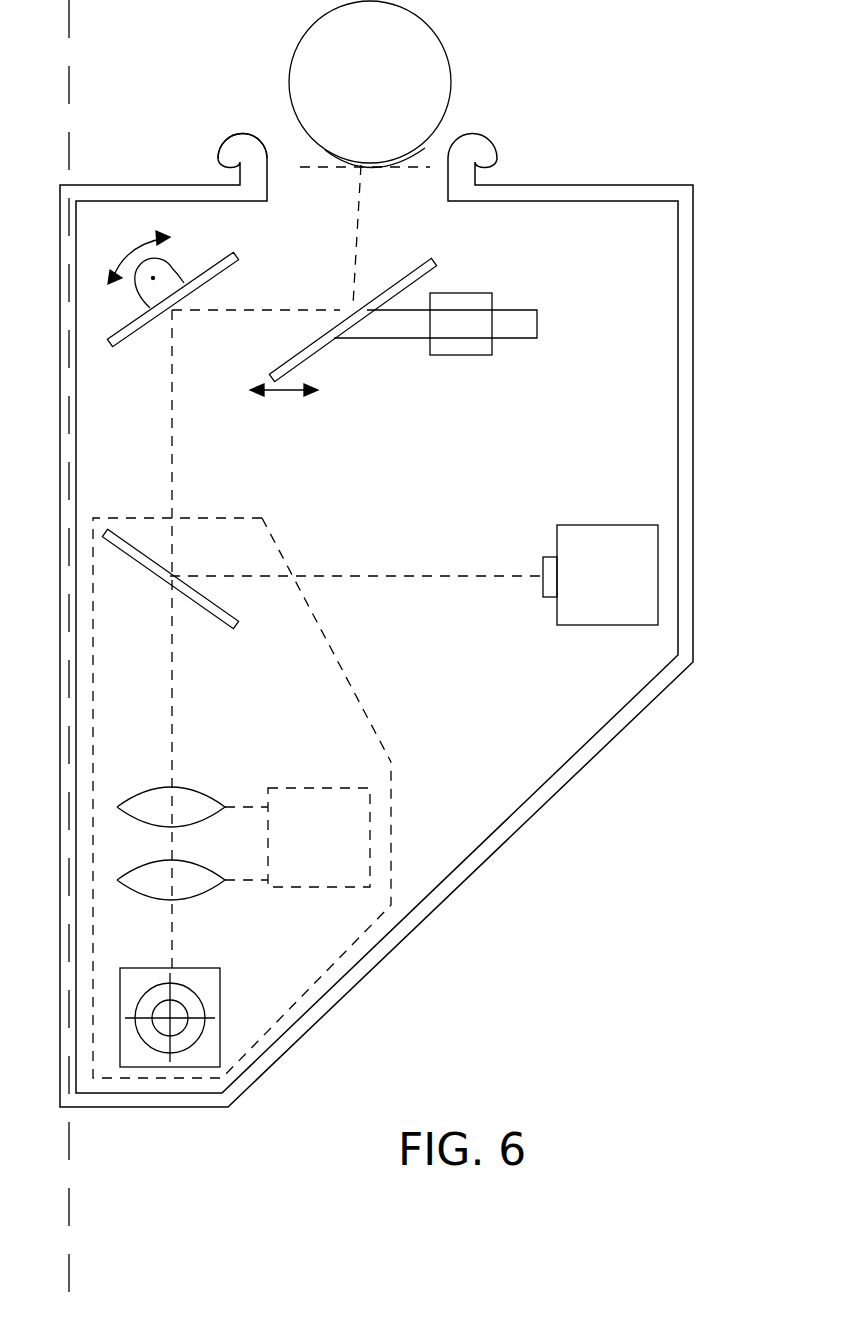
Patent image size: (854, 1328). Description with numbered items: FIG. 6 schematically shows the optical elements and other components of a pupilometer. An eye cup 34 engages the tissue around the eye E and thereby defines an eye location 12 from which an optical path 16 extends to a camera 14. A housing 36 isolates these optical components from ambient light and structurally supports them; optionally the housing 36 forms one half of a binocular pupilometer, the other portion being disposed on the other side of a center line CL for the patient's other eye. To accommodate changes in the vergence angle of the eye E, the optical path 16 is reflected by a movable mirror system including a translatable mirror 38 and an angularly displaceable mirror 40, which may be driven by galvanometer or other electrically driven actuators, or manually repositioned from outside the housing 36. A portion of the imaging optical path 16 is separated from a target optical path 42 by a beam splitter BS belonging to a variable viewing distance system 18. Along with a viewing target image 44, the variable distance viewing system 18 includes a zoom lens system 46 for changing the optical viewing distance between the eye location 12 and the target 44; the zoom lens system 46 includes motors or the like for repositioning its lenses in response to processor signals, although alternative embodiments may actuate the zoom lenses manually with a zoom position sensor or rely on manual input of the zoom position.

The center line CL is at (69, 1265).
The housing 36 is at (693, 333).
The eye cup 34 is at (240, 134).
The eye E is at (452, 70).
The eye location 12 is at (357, 168).
The optical path 16 is at (358, 246).
The angularly displaceable mirror 40 is at (200, 273).
The translatable mirror 38 is at (380, 338).
The camera 14 is at (580, 525).
The beam splitter BS is at (160, 578).
The target optical path 42 is at (172, 690).
The variable viewing distance system 18 is at (339, 661).
The zoom lens system 46 is at (203, 774).
The viewing target image 44 is at (220, 1003).